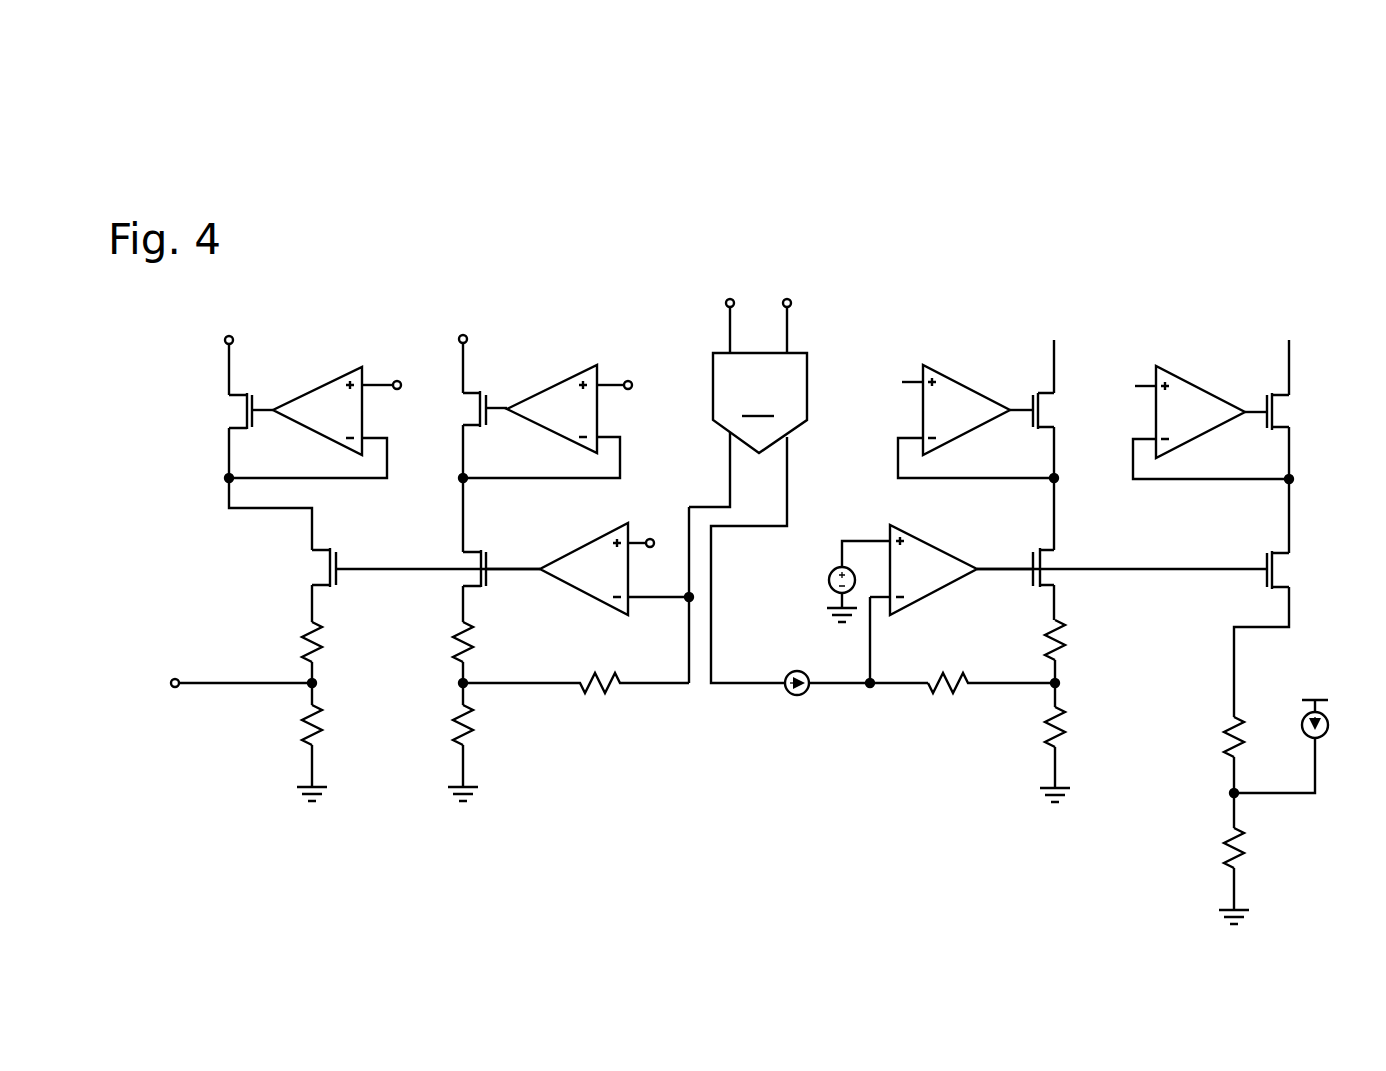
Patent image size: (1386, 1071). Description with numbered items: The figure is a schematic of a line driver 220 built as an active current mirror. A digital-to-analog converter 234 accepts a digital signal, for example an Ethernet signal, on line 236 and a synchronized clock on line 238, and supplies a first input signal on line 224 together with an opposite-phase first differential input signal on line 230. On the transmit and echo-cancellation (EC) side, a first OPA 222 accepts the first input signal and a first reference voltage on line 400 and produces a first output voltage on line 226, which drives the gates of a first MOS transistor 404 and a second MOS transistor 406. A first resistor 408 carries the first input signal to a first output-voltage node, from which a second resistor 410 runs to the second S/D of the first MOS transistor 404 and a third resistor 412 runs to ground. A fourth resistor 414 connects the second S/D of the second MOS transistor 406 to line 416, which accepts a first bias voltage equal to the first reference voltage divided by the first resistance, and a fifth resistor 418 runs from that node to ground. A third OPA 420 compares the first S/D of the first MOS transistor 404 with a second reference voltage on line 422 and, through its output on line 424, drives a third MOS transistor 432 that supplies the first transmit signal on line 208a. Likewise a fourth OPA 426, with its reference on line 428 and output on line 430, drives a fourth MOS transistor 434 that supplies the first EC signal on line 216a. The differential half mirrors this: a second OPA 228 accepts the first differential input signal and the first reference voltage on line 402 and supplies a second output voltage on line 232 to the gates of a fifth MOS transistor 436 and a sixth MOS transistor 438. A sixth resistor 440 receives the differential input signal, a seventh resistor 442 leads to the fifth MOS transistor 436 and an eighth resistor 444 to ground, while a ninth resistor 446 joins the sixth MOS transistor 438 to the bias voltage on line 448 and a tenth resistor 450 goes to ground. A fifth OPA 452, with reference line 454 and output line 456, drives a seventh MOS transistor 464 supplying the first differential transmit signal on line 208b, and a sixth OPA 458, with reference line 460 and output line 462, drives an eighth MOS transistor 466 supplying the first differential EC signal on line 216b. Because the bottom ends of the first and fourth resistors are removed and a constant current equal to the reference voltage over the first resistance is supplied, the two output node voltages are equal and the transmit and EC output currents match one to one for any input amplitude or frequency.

The line driver 220 is at (1180, 243).
The first differential EC signal line 216b is at (228, 362).
The eighth MOS transistor 466 is at (227, 412).
The sixth OPA output line 462 is at (265, 412).
The sixth OPA 458 is at (322, 395).
The second reference voltage input line 460 is at (377, 383).
The sixth MOS transistor 438 is at (308, 567).
The ninth resistor 446 is at (322, 643).
The first bias voltage line 448 is at (222, 688).
The tenth resistor 450 is at (322, 728).
The first differential transmit signal line 208b is at (467, 357).
The seventh MOS transistor 464 is at (455, 403).
The fifth OPA output line 456 is at (498, 412).
The fifth OPA 452 is at (553, 382).
The second reference voltage input line 454 is at (610, 382).
The fifth MOS transistor 436 is at (477, 542).
The seventh resistor 442 is at (473, 643).
The eighth resistor 444 is at (475, 722).
The sixth resistor 440 is at (598, 697).
The second output voltage line 232 is at (515, 572).
The second OPA 228 is at (583, 545).
The first reference voltage input line 402 is at (647, 538).
The digital-to-analog converter 234 is at (760, 403).
The clock input line 238 is at (727, 320).
The digital signal input line 236 is at (790, 320).
The first differential input signal line 230 is at (730, 468).
The first input signal line 224 is at (895, 687).
The first resistor 408 is at (943, 697).
The first reference voltage input line 400 is at (870, 540).
The first OPA 222 is at (937, 547).
The first output voltage line 226 is at (1003, 573).
The first MOS transistor 404 is at (1043, 538).
The second resistor 410 is at (1043, 637).
The third resistor 412 is at (1043, 723).
The second reference voltage input line 422 is at (908, 377).
The third OPA 420 is at (967, 383).
The third OPA output line 424 is at (1018, 413).
The third MOS transistor 432 is at (1052, 406).
The first transmit signal line 208a is at (1058, 355).
The second reference voltage input line 428 is at (1143, 380).
The fourth OPA 426 is at (1208, 390).
The fourth OPA output line 430 is at (1252, 415).
The fourth MOS transistor 434 is at (1297, 412).
The first EC signal line 216a is at (1292, 358).
The second MOS transistor 406 is at (1268, 538).
The fourth resistor 414 is at (1227, 733).
The fifth resistor 418 is at (1227, 845).
The first bias voltage line 416 is at (1290, 797).